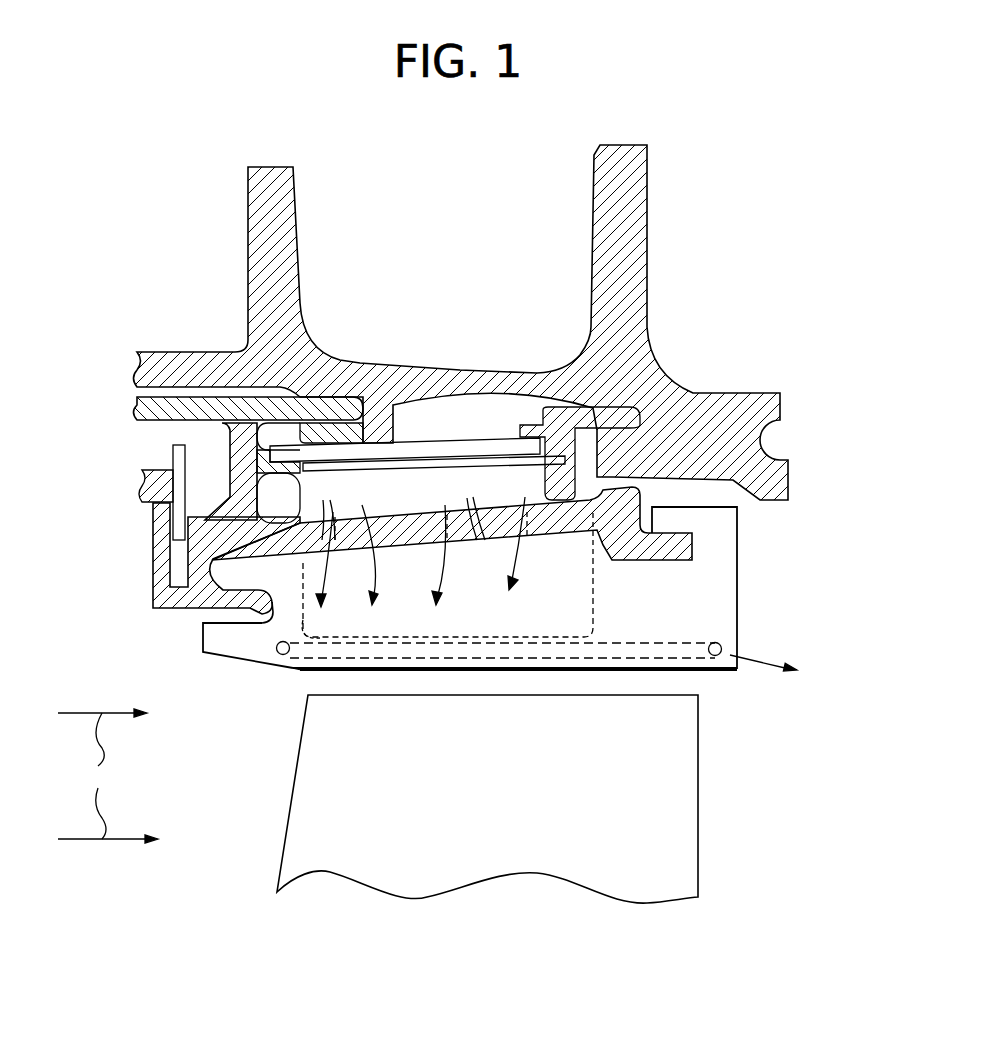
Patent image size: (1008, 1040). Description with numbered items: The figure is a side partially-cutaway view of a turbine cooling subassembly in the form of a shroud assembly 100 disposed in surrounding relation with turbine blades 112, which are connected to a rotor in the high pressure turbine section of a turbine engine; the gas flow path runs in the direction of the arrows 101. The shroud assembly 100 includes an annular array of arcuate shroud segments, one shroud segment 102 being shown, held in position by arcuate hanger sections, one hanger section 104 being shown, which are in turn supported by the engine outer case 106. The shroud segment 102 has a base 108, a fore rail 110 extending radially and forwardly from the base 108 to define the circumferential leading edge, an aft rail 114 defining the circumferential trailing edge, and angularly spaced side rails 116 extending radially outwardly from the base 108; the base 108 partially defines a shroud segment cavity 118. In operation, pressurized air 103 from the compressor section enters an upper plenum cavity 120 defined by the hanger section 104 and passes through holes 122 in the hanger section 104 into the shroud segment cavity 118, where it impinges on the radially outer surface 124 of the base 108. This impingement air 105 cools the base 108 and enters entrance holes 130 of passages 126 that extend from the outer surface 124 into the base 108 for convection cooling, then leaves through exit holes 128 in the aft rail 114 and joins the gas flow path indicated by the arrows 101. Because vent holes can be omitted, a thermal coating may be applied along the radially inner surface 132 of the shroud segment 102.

The shroud assembly 100 is at (183, 233).
The arrows 101 is at (108, 776).
The shroud segment 102 is at (506, 606).
The pressurized air 103 is at (223, 490).
The hanger section 104 is at (627, 410).
The impingement air 105 is at (320, 574).
The engine outer case 106 is at (461, 333).
The base 108 is at (388, 668).
The fore rail 110 is at (459, 586).
The turbine blades 112 is at (471, 845).
The aft rail 114 is at (722, 590).
The side rails 116 is at (610, 628).
The shroud segment cavity 118 is at (547, 622).
The upper plenum cavity 120 is at (440, 503).
The holes 122 is at (288, 493).
The radially outer surface 124 is at (467, 637).
The passages 126 is at (698, 653).
The exit holes 128 is at (733, 663).
The entrance holes 130 is at (323, 628).
The radially inner surface 132 is at (307, 672).